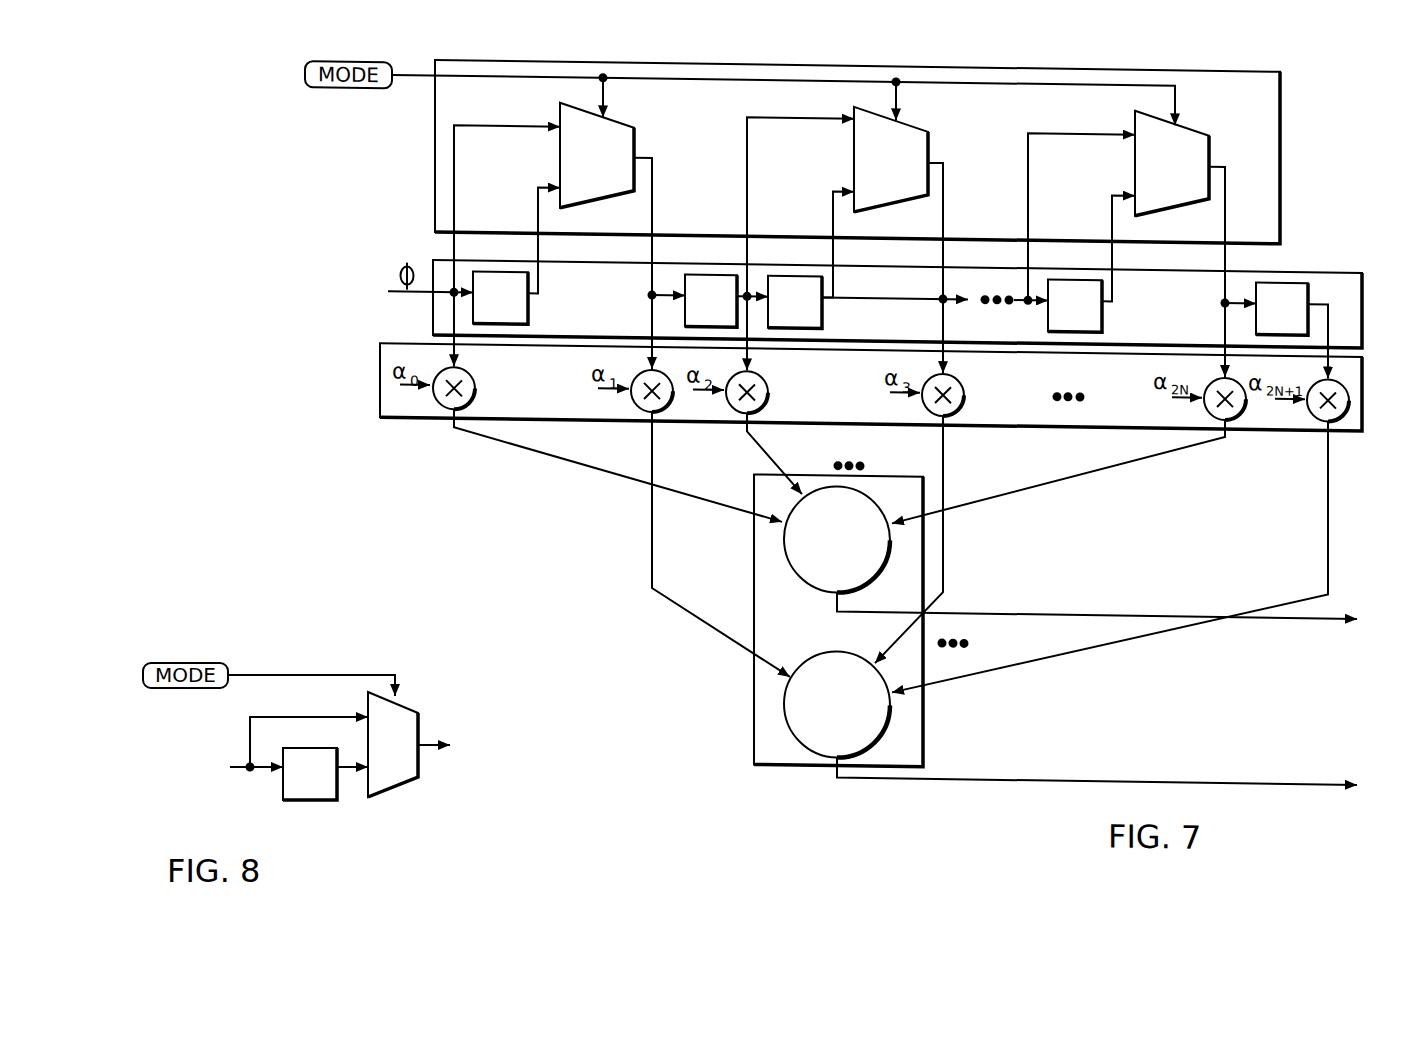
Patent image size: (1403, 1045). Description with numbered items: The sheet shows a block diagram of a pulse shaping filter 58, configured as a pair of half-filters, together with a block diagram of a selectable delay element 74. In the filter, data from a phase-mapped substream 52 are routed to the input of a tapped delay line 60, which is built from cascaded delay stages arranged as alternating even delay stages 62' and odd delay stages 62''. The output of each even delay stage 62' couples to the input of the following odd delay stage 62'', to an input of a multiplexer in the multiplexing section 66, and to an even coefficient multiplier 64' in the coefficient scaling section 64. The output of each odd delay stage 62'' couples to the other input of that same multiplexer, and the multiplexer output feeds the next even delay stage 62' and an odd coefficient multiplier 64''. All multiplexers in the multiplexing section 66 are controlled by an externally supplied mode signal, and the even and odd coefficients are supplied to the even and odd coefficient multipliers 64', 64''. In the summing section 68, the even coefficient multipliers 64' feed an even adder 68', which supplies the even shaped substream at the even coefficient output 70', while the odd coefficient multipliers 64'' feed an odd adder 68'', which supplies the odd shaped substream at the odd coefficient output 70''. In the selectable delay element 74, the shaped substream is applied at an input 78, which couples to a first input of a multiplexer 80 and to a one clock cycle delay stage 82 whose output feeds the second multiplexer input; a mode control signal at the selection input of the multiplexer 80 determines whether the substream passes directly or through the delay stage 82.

In FIG. 7, the phase-mapped substream 52 is at (404, 291).
In FIG. 7, the pulse shaping filter 58 is at (653, 761).
In FIG. 7, the tapped delay line 60 is at (1363, 277).
In FIG. 7, the even delay stage 62' is at (920, 291).
In FIG. 7, the odd delay stage 62'' is at (909, 290).
In FIG. 7, the coefficient scaling section 64 is at (889, 387).
In FIG. 7, the even coefficient multiplier 64' is at (839, 390).
In FIG. 7, the odd coefficient multiplier 64'' is at (964, 400).
In FIG. 7, the multiplexing section 66 is at (1282, 120).
In FIG. 7, the summing section 68 is at (813, 620).
In FIG. 7, the even adder 68' is at (829, 544).
In FIG. 7, the odd adder 68'' is at (829, 694).
In FIG. 7, the even coefficient output 70' is at (1101, 617).
In FIG. 7, the odd coefficient output 70'' is at (1097, 758).
In FIG. 8, the selectable delay element 74 is at (350, 847).
In FIG. 8, the input 78 is at (249, 764).
In FIG. 8, the multiplexer 80 is at (412, 710).
In FIG. 8, the one clock cycle delay stage 82 is at (305, 748).